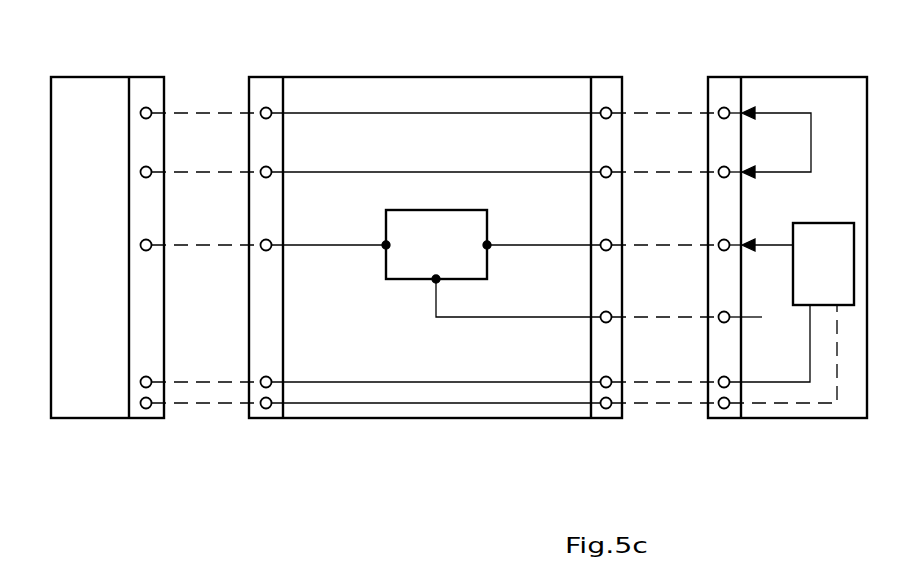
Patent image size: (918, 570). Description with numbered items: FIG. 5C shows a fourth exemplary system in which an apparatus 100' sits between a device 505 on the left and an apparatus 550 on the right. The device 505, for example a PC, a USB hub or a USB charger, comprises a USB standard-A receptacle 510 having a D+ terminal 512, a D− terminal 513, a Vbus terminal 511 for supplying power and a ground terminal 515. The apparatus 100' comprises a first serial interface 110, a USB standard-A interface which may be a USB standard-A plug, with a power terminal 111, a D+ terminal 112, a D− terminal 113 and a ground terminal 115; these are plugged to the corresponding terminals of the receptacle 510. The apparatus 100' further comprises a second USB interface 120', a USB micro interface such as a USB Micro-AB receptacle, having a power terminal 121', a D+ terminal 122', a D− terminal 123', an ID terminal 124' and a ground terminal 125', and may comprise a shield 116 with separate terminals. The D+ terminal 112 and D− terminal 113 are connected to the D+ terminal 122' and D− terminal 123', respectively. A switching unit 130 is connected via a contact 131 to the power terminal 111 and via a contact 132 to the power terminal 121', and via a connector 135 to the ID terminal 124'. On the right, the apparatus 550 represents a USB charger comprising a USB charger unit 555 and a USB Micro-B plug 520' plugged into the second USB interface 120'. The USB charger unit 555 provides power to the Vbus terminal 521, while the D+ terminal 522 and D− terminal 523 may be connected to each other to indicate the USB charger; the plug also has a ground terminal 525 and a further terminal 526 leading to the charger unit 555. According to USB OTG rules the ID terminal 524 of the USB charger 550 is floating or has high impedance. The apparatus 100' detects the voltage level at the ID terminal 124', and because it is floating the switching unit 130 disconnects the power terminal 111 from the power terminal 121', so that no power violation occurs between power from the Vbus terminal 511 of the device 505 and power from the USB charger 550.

The device 505 is at (72, 77).
The USB standard-A receptacle 510 is at (140, 77).
The Vbus terminal 511 is at (142, 240).
The D+ terminal 512 is at (142, 108).
The D− terminal 513 is at (142, 167).
The ground terminal 515 is at (142, 377).
The apparatus 100' is at (435, 223).
The first serial interface 110 is at (260, 77).
The power terminal 111 is at (262, 240).
The D+ terminal 112 is at (262, 108).
The D− terminal 113 is at (262, 167).
The ground terminal 115 is at (262, 377).
The shield 116 is at (452, 404).
The second USB interface 120' is at (617, 223).
The power terminal 121' is at (641, 231).
The D+ terminal 122' is at (641, 99).
The D− terminal 123' is at (641, 159).
The ID terminal 124' is at (643, 303).
The ground terminal 125' is at (642, 368).
The switching unit 130 is at (453, 257).
The contact 131 is at (378, 250).
The contact 132 is at (493, 250).
The connector 135 is at (432, 285).
The USB Micro-B plug 520' is at (742, 223).
The Vbus terminal 521 is at (730, 240).
The D+ terminal 522 is at (730, 109).
The D− terminal 523 is at (730, 168).
The ID terminal 524 is at (730, 312).
The ground terminal 525 is at (731, 386).
The shield terminal 526 is at (725, 409).
The apparatus 550 is at (838, 76).
The USB charger unit 555 is at (843, 277).